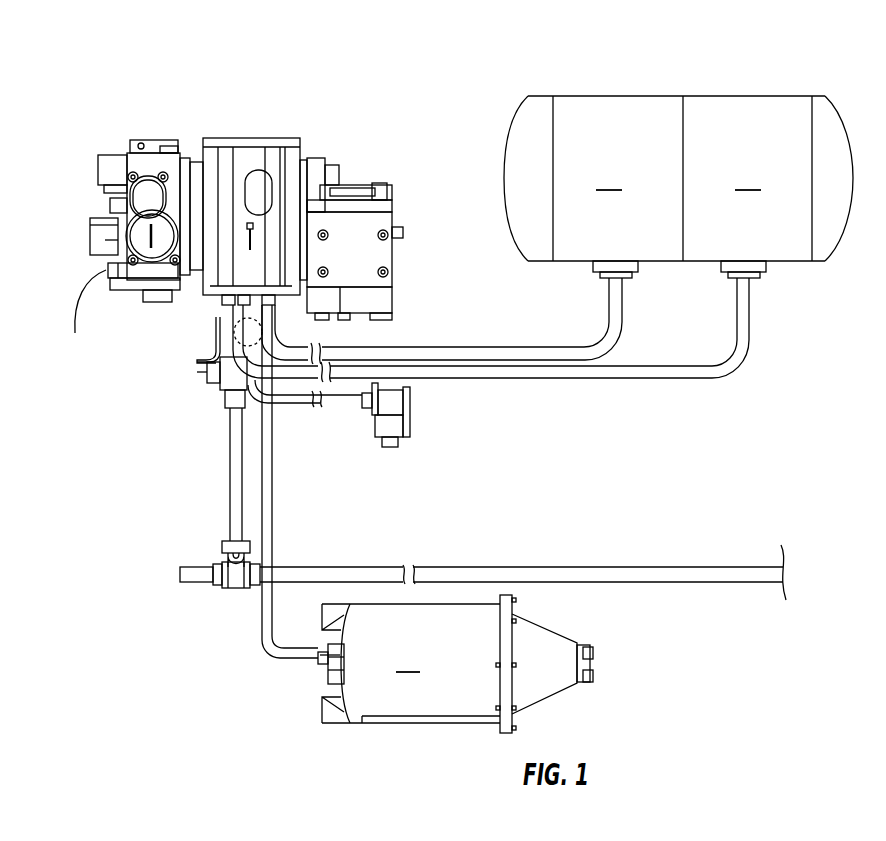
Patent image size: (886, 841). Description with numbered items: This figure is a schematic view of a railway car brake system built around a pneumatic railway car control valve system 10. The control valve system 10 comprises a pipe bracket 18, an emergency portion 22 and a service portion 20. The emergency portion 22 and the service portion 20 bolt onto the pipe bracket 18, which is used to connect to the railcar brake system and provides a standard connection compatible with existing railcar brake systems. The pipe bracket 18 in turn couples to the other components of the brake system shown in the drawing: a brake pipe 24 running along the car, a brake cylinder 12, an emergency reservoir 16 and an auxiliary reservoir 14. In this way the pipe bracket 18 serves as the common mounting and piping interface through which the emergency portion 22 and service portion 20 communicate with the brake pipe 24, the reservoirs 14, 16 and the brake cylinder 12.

The pneumatic railway car control valve system 10 is at (106, 104).
The brake cylinder 12 is at (397, 705).
The auxiliary reservoir 14 is at (754, 96).
The emergency reservoir 16 is at (616, 96).
The pipe bracket 18 is at (248, 138).
The service portion 20 is at (392, 222).
The emergency portion 22 is at (98, 168).
The brake pipe 24 is at (445, 571).